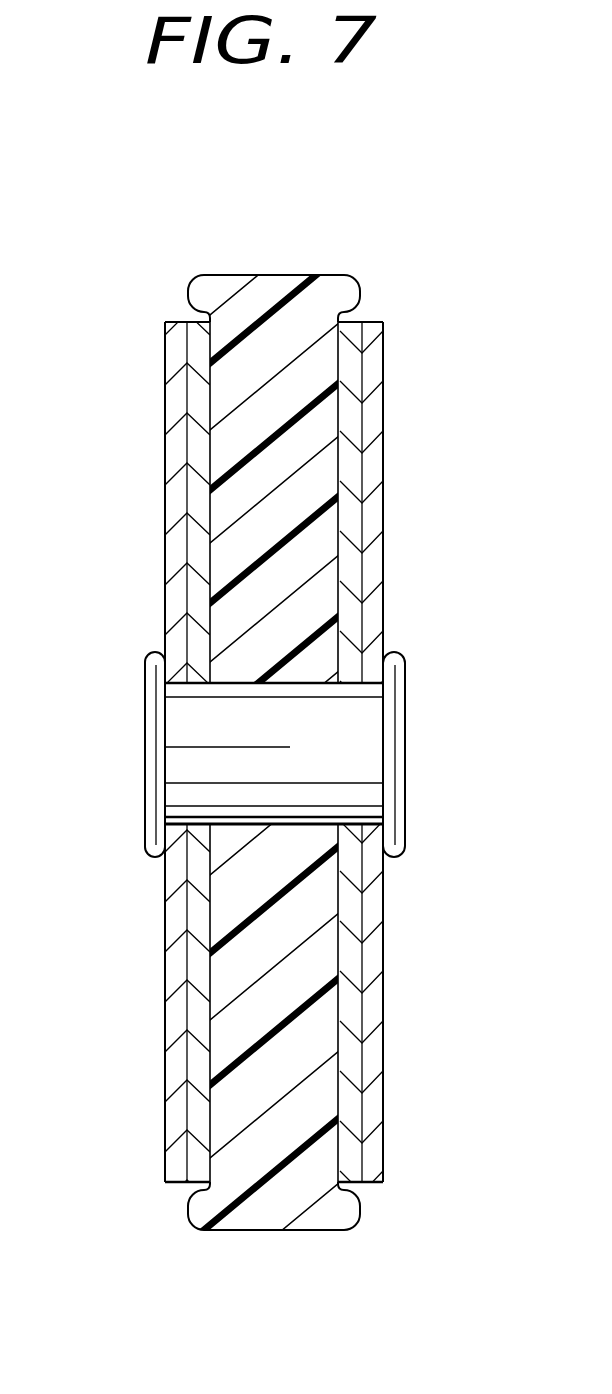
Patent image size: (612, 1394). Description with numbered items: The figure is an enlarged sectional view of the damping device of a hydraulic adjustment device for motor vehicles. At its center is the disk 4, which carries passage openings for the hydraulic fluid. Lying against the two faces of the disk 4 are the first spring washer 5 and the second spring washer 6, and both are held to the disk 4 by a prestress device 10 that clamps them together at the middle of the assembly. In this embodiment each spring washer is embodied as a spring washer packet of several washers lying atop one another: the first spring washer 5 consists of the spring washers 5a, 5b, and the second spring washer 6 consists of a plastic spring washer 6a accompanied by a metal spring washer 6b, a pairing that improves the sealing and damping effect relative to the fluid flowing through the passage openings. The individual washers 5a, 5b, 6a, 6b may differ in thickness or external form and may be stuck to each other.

The disk 4 is at (274, 290).
The first spring washer 5 is at (131, 804).
The spring washer 5a is at (173, 1098).
The spring washer 5b is at (204, 1024).
The second spring washer 6 is at (416, 789).
The plastic spring washer 6a is at (352, 1098).
The metal spring washer 6b is at (380, 1032).
The prestress device 10 is at (180, 757).